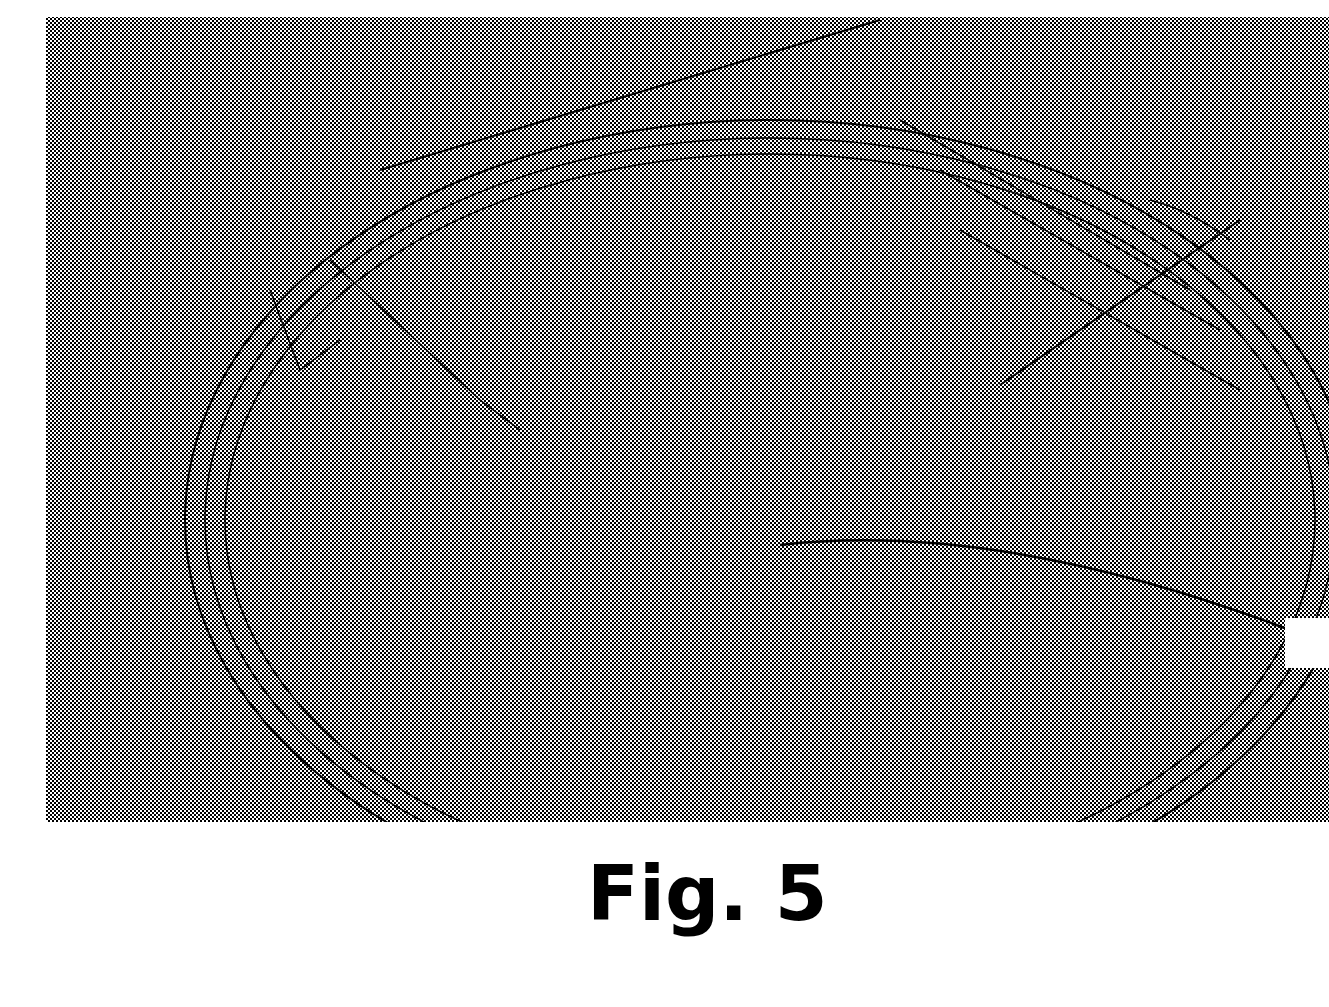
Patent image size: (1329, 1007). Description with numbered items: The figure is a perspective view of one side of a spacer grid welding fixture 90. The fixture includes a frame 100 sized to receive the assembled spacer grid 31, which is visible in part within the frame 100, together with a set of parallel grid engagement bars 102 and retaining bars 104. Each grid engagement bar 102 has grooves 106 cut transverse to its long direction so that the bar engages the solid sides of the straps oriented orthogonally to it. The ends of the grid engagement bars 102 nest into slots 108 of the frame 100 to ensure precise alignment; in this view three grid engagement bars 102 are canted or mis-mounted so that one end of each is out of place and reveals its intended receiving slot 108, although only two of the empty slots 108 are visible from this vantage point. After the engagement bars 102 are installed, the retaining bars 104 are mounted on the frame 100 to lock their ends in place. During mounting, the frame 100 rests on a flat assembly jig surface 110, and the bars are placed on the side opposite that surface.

The spacer grid welding fixture 90 is at (1185, 162).
The frame 100 is at (500, 585).
The grid engagement bars 102 is at (975, 212).
The retaining bars 104 is at (435, 140).
The grooves 106 is at (485, 405).
The slots 108 is at (295, 372).
The assembly jig surface 110 is at (288, 588).
The spacer grid 31 is at (1054, 604).